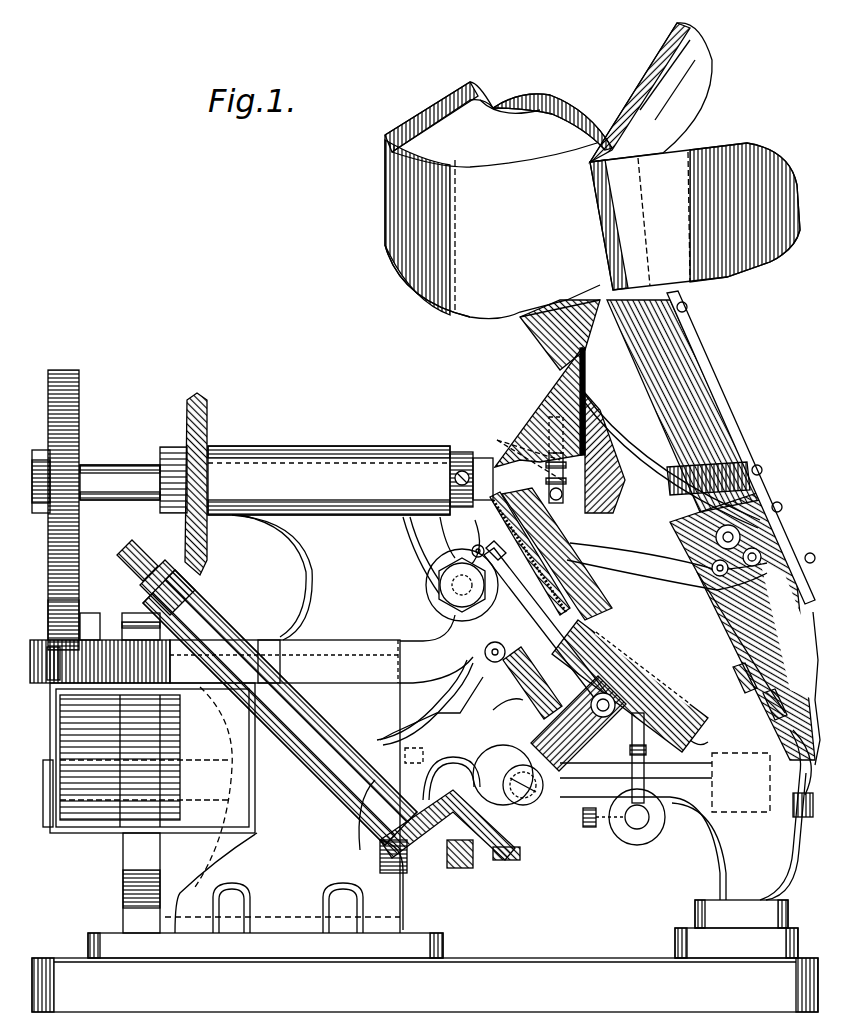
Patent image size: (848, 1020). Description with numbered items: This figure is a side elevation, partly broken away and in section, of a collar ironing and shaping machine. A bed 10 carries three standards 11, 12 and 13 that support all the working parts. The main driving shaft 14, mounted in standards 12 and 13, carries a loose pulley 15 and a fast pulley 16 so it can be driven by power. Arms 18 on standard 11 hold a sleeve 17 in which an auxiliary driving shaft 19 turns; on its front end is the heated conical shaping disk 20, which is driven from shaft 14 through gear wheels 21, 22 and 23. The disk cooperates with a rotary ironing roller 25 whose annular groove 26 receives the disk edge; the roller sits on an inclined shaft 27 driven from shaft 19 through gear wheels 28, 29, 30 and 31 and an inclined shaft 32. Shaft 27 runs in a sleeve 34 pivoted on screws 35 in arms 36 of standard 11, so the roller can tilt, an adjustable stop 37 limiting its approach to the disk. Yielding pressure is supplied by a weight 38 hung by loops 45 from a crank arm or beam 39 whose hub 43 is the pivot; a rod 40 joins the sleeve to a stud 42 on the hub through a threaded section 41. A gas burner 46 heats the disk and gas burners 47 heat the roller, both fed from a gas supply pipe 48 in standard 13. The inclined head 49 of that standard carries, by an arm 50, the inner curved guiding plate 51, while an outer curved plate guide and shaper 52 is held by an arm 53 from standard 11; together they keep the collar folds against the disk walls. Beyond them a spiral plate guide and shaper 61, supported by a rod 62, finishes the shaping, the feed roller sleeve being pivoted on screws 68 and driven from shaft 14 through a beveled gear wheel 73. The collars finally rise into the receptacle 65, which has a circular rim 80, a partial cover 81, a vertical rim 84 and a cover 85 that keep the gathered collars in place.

The bed 10 is at (425, 985).
The standard 11 is at (265, 820).
The standard 12 is at (123, 863).
The standard 13 is at (738, 844).
The main driving shaft 14 is at (695, 773).
The loose pulley 15 is at (403, 892).
The fast pulley 16 is at (322, 645).
The sleeve 17 is at (325, 445).
The arms 18 is at (415, 552).
The auxiliary driving shaft 19 is at (117, 463).
The conical shaping disk 20 is at (540, 412).
The gear wheel 21 is at (46, 827).
The intermediate gear 22 is at (80, 603).
The gear wheel 23 is at (76, 510).
The ironing and shaping roller 25 is at (630, 686).
The annular groove 26 is at (703, 730).
The shaft 27 is at (465, 863).
The gear wheel 28 is at (210, 412).
The gear wheel 29 is at (155, 595).
The gear wheel 30 is at (447, 831).
The gear wheel 31 is at (520, 855).
The inclined shaft 32 is at (136, 548).
The sleeve 34 is at (545, 732).
The screws 35 is at (530, 805).
The arms 36 is at (492, 760).
The adjustable stop 37 is at (553, 711).
The weight 38 is at (178, 742).
The crank arm or beam 39 is at (378, 648).
The rod 40 is at (528, 612).
The threaded section 41 is at (477, 542).
The stud 42 is at (499, 548).
The hub 43 is at (428, 580).
The loops 45 is at (270, 621).
The gas burner 46 is at (514, 453).
The gas burners 47 is at (632, 750).
The gas supply pipe 48 is at (634, 830).
The head 49 is at (745, 629).
The arm 50 is at (698, 575).
The curved guiding and shaping plate 51 is at (545, 505).
The curved plate guide and shaper 52 is at (488, 512).
The arm 53 is at (552, 585).
The plate guide and shaper 61 is at (548, 345).
The rod 62 is at (724, 404).
The receptacle 65 is at (427, 283).
The screws 68 is at (740, 678).
The beveled gear wheel 73 is at (800, 820).
The circular rim 80 is at (540, 94).
The partial cover 81 is at (510, 125).
The vertical rim or wall 84 is at (695, 216).
The cover 85 is at (651, 92).